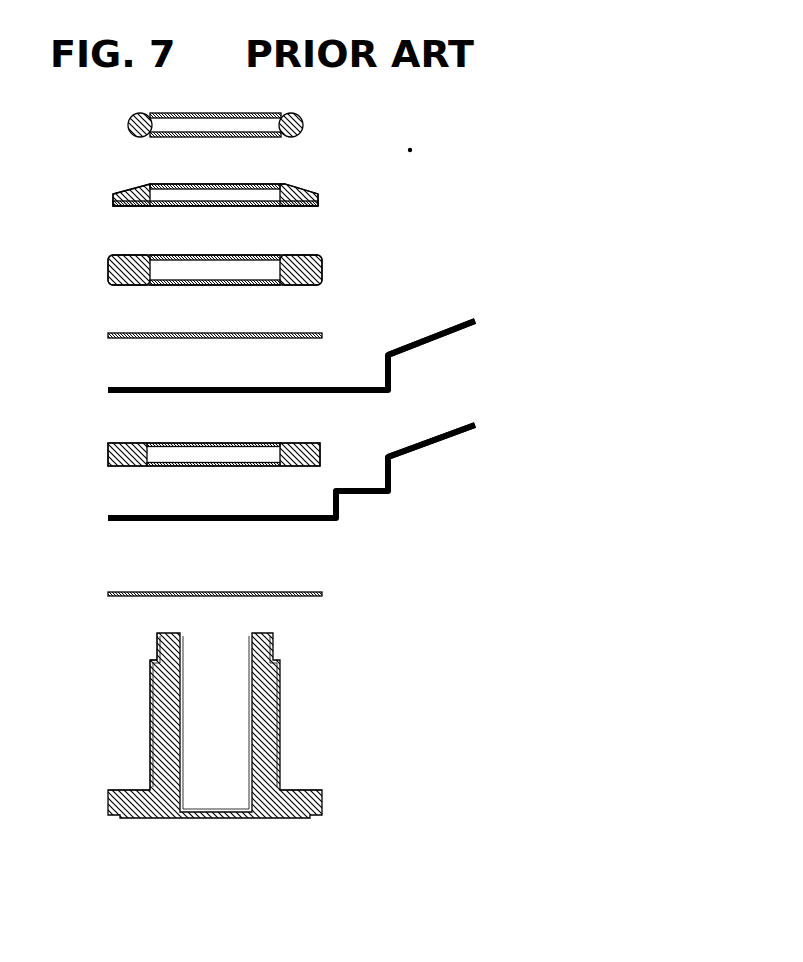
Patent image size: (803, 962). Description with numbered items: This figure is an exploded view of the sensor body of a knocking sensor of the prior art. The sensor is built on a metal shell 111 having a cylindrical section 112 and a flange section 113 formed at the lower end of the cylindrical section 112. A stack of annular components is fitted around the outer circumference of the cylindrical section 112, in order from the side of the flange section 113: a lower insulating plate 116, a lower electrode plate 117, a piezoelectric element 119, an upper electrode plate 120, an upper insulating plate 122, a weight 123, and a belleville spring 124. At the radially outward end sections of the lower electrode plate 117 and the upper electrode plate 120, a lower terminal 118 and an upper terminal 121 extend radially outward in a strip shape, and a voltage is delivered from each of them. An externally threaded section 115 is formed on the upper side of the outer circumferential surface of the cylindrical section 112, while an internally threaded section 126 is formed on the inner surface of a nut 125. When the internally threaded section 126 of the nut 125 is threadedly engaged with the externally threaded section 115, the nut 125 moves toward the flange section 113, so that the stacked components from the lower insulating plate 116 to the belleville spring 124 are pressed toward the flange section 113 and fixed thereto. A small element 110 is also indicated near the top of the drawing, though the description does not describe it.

The particle / small element 110 is at (413, 148).
The metal shell 111 is at (229, 725).
The cylindrical section 112 is at (280, 680).
The flange section 113 is at (297, 790).
The externally threaded section 115 is at (150, 680).
The lower insulating plate 116 is at (300, 592).
The lower electrode plate 117 is at (300, 515).
The lower terminal 118 is at (445, 430).
The piezoelectric element 119 is at (300, 444).
The upper electrode plate 120 is at (340, 388).
The upper terminal 121 is at (438, 332).
The upper insulating plate 122 is at (303, 333).
The weight 123 is at (322, 268).
The belleville spring 124 is at (292, 186).
The nut 125 is at (304, 121).
The internally threaded section 126 is at (172, 116).